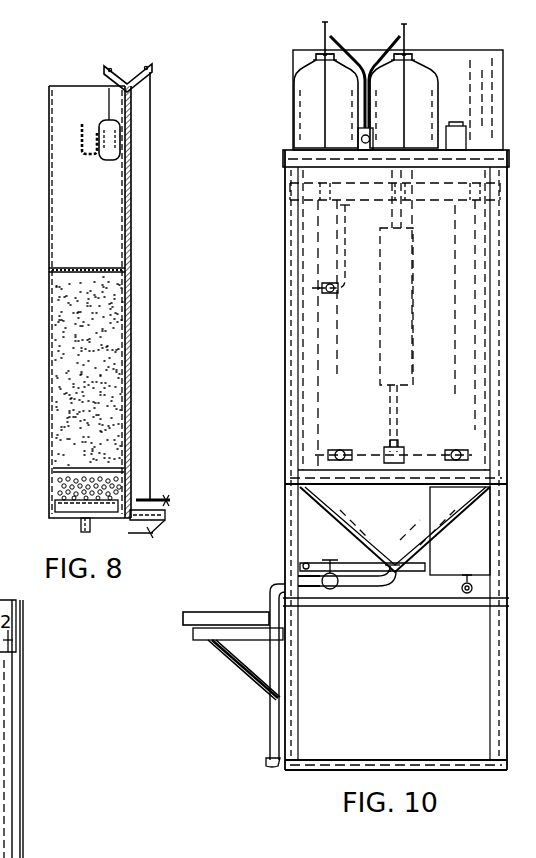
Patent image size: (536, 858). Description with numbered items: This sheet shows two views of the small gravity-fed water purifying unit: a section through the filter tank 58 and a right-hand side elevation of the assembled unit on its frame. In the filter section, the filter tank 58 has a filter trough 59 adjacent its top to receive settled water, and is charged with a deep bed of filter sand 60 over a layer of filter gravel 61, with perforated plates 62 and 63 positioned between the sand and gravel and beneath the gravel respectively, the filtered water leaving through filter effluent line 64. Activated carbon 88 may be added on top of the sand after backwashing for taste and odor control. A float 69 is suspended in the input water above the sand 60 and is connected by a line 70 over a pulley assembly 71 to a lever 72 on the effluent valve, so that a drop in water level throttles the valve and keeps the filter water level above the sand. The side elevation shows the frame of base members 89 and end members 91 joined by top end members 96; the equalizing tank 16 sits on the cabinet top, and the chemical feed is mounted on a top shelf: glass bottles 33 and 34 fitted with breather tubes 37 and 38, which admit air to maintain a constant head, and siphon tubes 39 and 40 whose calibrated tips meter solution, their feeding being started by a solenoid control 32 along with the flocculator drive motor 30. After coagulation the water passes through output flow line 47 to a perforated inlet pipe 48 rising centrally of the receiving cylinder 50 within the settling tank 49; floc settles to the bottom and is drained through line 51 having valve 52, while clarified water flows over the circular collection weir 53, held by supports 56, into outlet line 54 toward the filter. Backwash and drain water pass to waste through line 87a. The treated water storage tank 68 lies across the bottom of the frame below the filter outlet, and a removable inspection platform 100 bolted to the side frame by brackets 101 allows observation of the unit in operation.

In FIG. 10, the equalizing tank 16 is at (470, 62).
In FIG. 10, the flocculator drive motor 30 is at (458, 128).
In FIG. 10, the solenoid control 32 is at (364, 148).
In FIG. 10, the glass bottle 33 is at (420, 78).
In FIG. 10, the glass bottle 34 is at (310, 80).
In FIG. 10, the breather tube 37 is at (406, 42).
In FIG. 10, the breather tube 38 is at (322, 36).
In FIG. 10, the siphon tube 39 is at (385, 58).
In FIG. 10, the siphon tube 40 is at (352, 60).
In FIG. 10, the output flow line 47 is at (364, 454).
In FIG. 10, the perforated inlet pipe 48 is at (390, 400).
In FIG. 10, the settling tank 49 is at (416, 472).
In FIG. 10, the receiving cylinder 50 is at (380, 312).
In FIG. 10, the drain line 51 is at (370, 590).
In FIG. 10, the valve 52 is at (330, 590).
In FIG. 10, the circular collection weir 53 is at (450, 200).
In FIG. 10, the outlet line 54 is at (343, 262).
In FIG. 10, the supports 56 is at (478, 200).
In FIG. 8, the filter tank 58 is at (128, 196).
In FIG. 10, the filter tank 58 is at (472, 516).
In FIG. 8, the filter trough 59 is at (84, 140).
In FIG. 8, the filter sand 60 is at (85, 345).
In FIG. 8, the filter gravel 61 is at (72, 483).
In FIG. 8, the perforated plate 62 is at (60, 470).
In FIG. 8, the perforated plate 63 is at (56, 502).
In FIG. 8, the filter effluent line 64 is at (81, 526).
In FIG. 10, the filter effluent line 64 is at (468, 596).
In FIG. 10, the treated water storage tank 68 is at (408, 682).
In FIG. 8, the float 69 is at (110, 152).
In FIG. 8, the line 70 is at (150, 112).
In FIG. 8, the pulley assembly 71 is at (112, 70).
In FIG. 8, the lever 72 is at (163, 500).
In FIG. 10, the waste line 87a is at (270, 728).
In FIG. 8, the activated carbon 88 is at (107, 268).
In FIG. 10, the base members 89 is at (410, 760).
In FIG. 10, the end members 91 is at (498, 672).
In FIG. 10, the top end members 96 is at (300, 163).
In FIG. 10, the removable inspection platform 100 is at (236, 614).
In FIG. 10, the brackets 101 is at (236, 664).